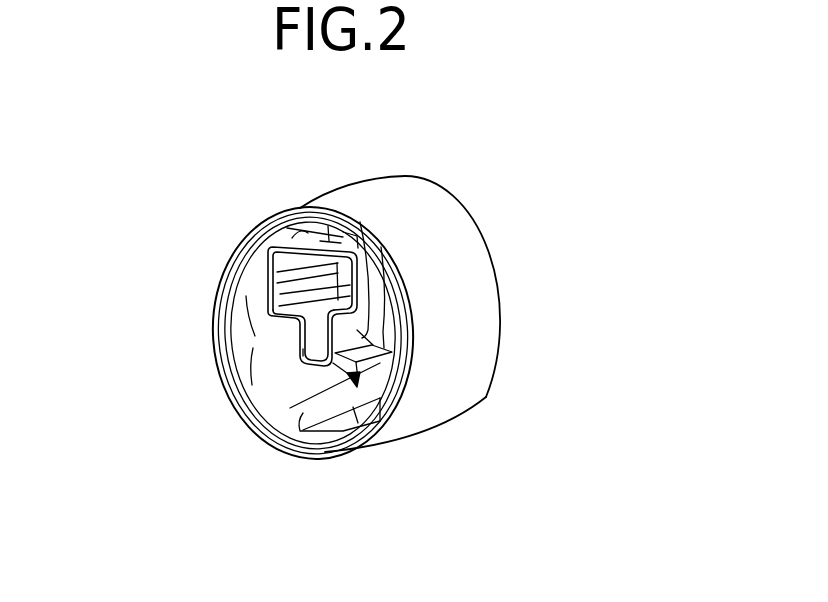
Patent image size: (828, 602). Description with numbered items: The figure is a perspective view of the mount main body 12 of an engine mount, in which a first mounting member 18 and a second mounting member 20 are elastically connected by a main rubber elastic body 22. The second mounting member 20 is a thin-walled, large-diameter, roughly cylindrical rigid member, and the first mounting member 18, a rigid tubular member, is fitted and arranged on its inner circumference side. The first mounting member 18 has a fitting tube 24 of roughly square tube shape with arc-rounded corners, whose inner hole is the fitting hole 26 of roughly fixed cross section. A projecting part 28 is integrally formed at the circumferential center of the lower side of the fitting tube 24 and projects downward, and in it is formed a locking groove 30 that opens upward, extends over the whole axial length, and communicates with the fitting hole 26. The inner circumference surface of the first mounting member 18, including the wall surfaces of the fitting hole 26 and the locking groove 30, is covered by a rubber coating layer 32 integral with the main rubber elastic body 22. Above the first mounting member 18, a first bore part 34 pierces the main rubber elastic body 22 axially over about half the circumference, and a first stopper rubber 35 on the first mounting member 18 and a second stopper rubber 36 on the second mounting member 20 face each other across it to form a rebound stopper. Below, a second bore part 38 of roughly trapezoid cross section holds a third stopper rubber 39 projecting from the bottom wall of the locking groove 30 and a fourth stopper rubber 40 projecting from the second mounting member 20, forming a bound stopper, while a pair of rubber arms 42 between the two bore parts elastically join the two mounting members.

The mount main body 12 is at (451, 164).
The first mounting member 18 is at (173, 284).
The second mounting member 20 is at (485, 284).
The main rubber elastic body 22 is at (267, 382).
The fitting tube 24 is at (283, 279).
The fitting hole 26 is at (345, 278).
The projecting part 28 is at (300, 352).
The locking groove 30 is at (310, 353).
The rubber coating layer 32 is at (268, 265).
The first bore part 34 is at (297, 232).
The first stopper rubber 35 is at (343, 240).
The second stopper rubber 36 is at (328, 225).
The second bore part 38 is at (387, 380).
The third stopper rubber 39 is at (380, 363).
The fourth stopper rubber 40 is at (336, 425).
The rubber arms 42 is at (277, 357).